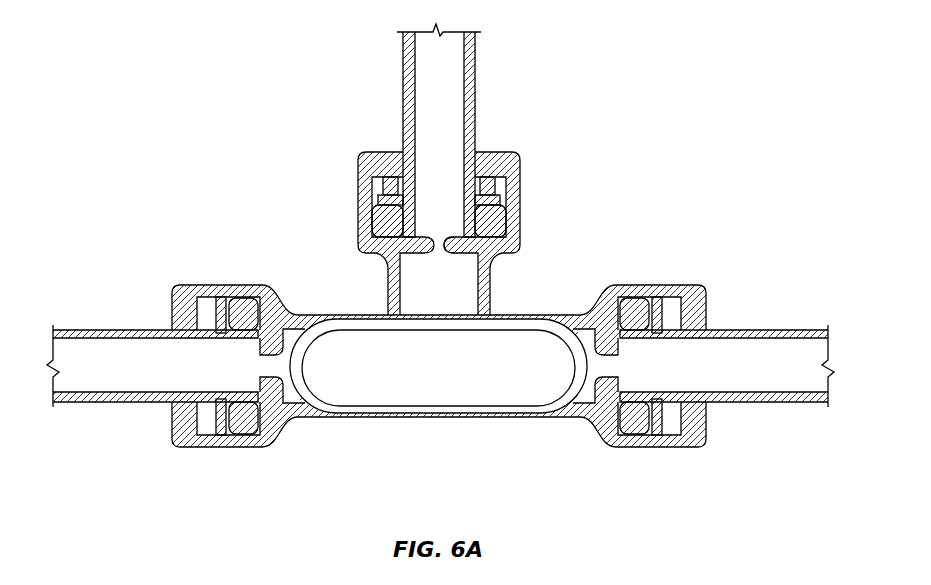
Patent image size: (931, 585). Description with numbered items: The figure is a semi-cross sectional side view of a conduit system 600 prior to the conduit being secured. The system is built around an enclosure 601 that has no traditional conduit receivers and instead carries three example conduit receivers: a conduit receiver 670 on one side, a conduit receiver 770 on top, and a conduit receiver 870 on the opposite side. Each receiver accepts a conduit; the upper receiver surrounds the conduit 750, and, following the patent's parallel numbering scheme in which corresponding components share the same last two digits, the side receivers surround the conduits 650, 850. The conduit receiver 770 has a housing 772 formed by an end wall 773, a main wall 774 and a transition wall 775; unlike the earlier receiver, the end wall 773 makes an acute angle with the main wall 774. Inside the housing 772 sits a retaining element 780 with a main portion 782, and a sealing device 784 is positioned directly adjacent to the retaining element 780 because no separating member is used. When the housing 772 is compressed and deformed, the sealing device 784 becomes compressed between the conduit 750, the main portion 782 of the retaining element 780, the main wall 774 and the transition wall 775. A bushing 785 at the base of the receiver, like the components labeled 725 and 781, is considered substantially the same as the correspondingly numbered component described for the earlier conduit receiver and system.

The conduit system 600 is at (155, 68).
The enclosure 601 is at (352, 425).
The pipe 650 is at (105, 405).
The conduit receiver 670 is at (235, 283).
The insert 725 is at (512, 314).
The conduit 750 is at (400, 50).
The conduit receiver 770 is at (356, 185).
The housing 772 is at (512, 152).
The end wall 773 is at (482, 170).
The main wall 774 is at (505, 215).
The transition wall 775 is at (495, 250).
The retaining element 780 is at (508, 185).
The groove 781 is at (382, 174).
The main portion of the retaining element 782 is at (400, 190).
The sealing device 784 is at (372, 222).
The bushing 785 is at (458, 249).
The pipe 850 is at (790, 330).
The conduit receiver 870 is at (660, 450).